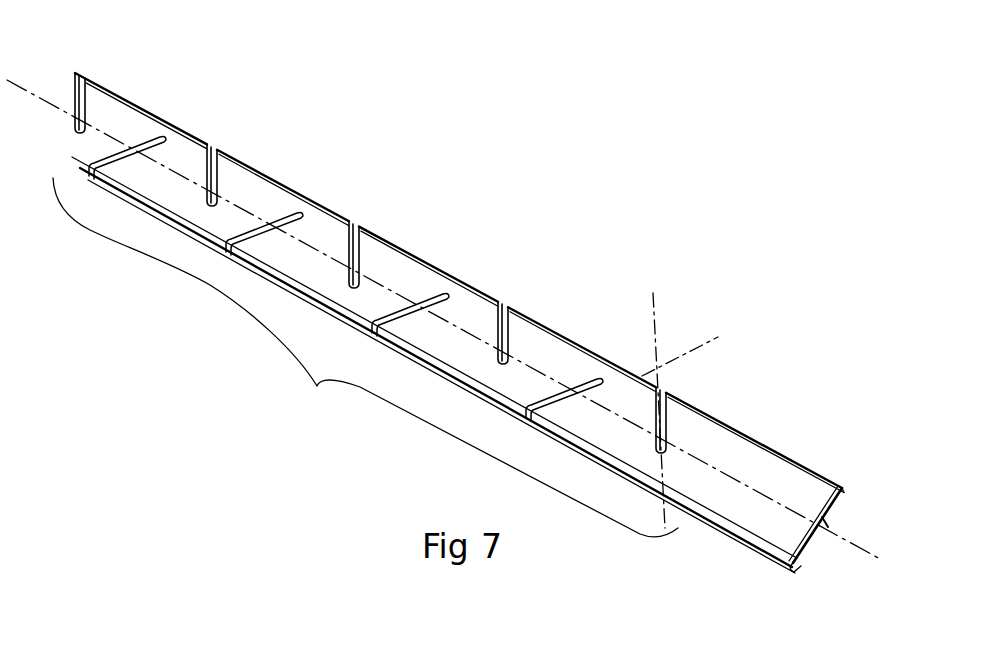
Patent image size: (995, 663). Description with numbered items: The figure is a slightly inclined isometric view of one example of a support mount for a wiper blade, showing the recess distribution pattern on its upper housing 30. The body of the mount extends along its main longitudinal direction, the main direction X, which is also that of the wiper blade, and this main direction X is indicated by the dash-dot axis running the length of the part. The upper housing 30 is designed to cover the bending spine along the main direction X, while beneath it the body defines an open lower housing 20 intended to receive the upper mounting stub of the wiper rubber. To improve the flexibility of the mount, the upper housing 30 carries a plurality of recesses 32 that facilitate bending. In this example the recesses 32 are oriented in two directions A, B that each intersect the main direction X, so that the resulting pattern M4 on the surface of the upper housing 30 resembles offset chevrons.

The open lower housing 20 is at (829, 525).
The upper housing 30 is at (842, 490).
The recesses 32 is at (491, 314).
The main direction X is at (47, 101).
The first direction A is at (683, 348).
The second direction B is at (652, 320).
The recess distribution pattern M4 is at (365, 357).